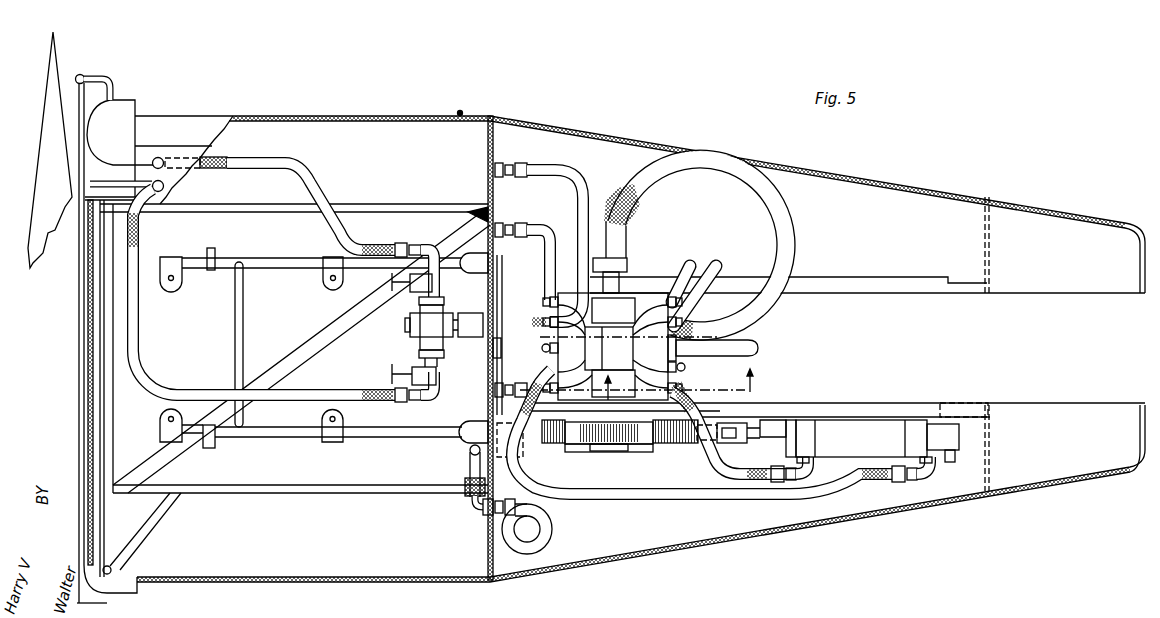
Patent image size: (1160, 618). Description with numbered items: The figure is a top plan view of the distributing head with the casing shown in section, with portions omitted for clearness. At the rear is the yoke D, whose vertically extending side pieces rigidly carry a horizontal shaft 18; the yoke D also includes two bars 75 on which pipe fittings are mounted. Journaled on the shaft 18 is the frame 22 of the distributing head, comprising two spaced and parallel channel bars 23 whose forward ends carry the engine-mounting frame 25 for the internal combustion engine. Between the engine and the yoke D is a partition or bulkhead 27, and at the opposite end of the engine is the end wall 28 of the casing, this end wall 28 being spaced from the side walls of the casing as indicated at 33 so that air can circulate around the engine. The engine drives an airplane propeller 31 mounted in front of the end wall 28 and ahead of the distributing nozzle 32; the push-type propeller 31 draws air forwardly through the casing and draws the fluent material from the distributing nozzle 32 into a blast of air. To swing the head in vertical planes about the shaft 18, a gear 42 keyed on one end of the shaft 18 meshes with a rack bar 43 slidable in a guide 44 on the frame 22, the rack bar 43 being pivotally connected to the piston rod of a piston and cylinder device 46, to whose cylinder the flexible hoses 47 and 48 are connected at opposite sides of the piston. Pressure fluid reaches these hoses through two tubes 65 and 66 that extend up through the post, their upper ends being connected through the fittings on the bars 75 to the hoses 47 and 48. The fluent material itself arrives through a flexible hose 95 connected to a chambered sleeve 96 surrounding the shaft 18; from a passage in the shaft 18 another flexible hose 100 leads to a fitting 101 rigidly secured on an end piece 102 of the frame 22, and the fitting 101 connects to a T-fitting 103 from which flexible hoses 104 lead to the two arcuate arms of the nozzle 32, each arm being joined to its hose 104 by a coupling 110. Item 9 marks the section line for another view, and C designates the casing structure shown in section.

The section line 9 is at (614, 398).
The horizontal shaft 18 is at (597, 452).
The frame 22 is at (868, 279).
The channel bars 23 is at (890, 291).
The engine-mounting frame 25 is at (370, 433).
The bulkhead 27 is at (490, 543).
The end wall 28 is at (137, 110).
The airplane propeller 31 is at (58, 82).
The distributing nozzle 32 is at (86, 79).
The space 33 is at (118, 575).
The gear 42 is at (572, 444).
The rack bar 43 is at (668, 444).
The guide 44 is at (631, 452).
The piston and cylinder device 46 is at (862, 446).
The flexible hose 47 is at (722, 457).
The flexible hose 48 is at (734, 487).
The tube 65 is at (688, 371).
The tube 66 is at (552, 349).
The bars 75 is at (563, 298).
The flexible hose 95 is at (762, 348).
The chambered sleeve 96 is at (640, 297).
The flexible hose 100 is at (706, 162).
The fitting 101 is at (492, 348).
The end piece 102 is at (480, 362).
The T-fitting 103 is at (410, 332).
The flexible hoses 104 is at (303, 192).
The coupling 110 is at (163, 157).
The housing C is at (394, 116).
The yoke D is at (625, 295).